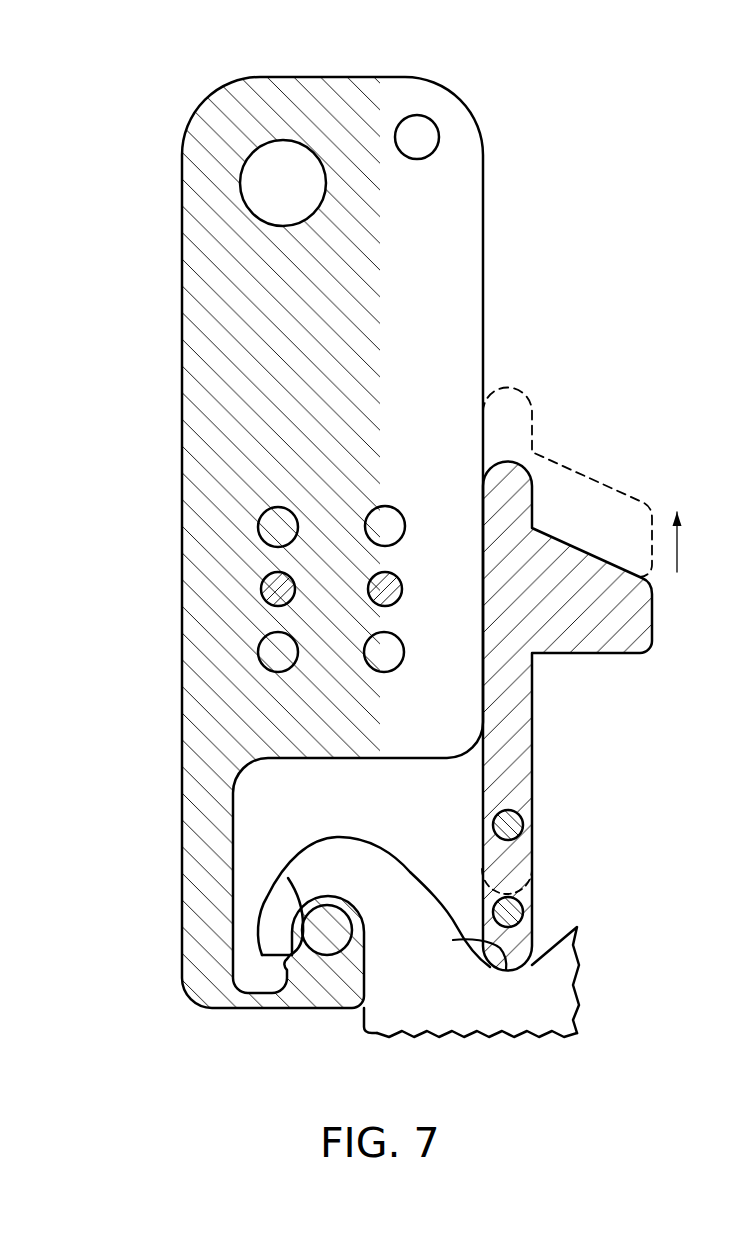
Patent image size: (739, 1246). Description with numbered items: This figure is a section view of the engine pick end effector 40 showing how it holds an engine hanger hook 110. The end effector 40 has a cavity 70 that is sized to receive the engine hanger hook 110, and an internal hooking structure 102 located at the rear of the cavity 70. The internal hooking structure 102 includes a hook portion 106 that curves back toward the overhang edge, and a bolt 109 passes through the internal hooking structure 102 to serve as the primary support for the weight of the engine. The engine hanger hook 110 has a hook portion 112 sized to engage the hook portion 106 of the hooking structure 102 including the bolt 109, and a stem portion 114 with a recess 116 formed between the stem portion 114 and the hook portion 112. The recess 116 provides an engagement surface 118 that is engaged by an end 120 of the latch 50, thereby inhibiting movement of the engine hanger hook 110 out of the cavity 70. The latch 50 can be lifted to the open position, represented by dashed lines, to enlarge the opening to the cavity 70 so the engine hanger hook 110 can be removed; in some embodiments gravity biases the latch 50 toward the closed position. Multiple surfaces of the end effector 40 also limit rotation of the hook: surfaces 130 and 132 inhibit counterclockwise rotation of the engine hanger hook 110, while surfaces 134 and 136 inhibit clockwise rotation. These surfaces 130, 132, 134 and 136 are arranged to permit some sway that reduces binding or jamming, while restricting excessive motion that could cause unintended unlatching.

The engine pick end effector 40 is at (369, 543).
The latch 50 is at (580, 477).
The cavity 70 is at (516, 762).
The internal hooking structure 102 is at (272, 545).
The hook portion 106 is at (320, 996).
The bolt 109 is at (328, 926).
The engine hanger hook 110 is at (384, 1017).
The hook portion 112 is at (342, 843).
The stem portion 114 is at (482, 1025).
The recess 116 is at (500, 974).
The engagement surface 118 is at (507, 975).
The end of the latch 120 is at (533, 878).
The surface 130 is at (233, 930).
The surface 132 is at (262, 955).
The surface 134 is at (288, 878).
The surface 136 is at (480, 915).